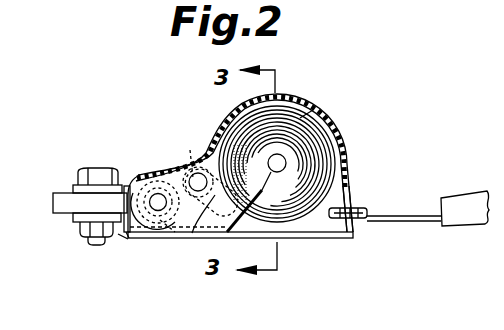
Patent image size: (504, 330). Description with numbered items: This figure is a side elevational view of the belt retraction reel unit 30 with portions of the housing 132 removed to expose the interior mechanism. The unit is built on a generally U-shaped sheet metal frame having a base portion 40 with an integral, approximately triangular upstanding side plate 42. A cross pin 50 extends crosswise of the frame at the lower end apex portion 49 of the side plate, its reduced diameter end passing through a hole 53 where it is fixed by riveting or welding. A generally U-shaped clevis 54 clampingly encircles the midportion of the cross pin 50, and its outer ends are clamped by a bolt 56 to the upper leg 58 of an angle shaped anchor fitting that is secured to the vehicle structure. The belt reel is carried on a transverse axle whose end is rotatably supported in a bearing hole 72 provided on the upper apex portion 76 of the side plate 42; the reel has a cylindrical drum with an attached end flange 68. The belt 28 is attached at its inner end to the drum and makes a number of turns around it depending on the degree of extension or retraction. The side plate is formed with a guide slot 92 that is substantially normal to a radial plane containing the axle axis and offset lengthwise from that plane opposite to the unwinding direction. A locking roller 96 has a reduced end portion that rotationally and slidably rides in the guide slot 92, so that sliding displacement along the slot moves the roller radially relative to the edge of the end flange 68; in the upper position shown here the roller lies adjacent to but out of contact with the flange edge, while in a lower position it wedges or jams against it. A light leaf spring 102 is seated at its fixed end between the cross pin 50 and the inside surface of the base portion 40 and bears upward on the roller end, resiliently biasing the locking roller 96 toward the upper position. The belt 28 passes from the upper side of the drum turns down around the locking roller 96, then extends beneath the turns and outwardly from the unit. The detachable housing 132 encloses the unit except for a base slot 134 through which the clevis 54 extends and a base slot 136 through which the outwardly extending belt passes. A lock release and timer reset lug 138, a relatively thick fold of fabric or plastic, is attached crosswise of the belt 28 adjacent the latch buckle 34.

The belt 28 is at (408, 215).
The belt retraction reel unit 30 is at (358, 120).
The latch buckle 34 is at (444, 203).
The base portion 40 is at (316, 239).
The side plate 42 is at (232, 238).
The lower end apex portion 49 is at (159, 193).
The cross pin 50 is at (128, 238).
The hole 53 is at (186, 158).
The clevis 54 is at (136, 153).
The bolt 56 is at (97, 170).
The upper leg 58 is at (67, 174).
The end flange 68 is at (287, 101).
The bearing hole 72 is at (208, 161).
The upper apex portion 76 is at (286, 163).
The guide slot 92 is at (196, 234).
The locking roller 96 is at (204, 172).
The leaf spring 102 is at (167, 238).
The housing 132 is at (313, 110).
The base slot 134 is at (118, 234).
The base slot 136 is at (348, 192).
The lock release and timer reset lug 138 is at (354, 212).